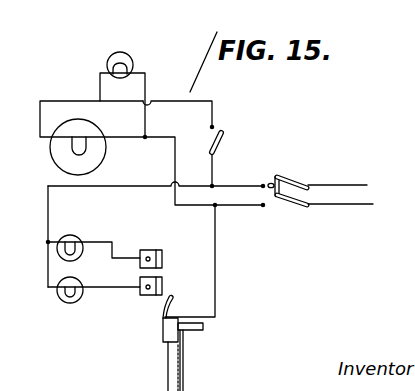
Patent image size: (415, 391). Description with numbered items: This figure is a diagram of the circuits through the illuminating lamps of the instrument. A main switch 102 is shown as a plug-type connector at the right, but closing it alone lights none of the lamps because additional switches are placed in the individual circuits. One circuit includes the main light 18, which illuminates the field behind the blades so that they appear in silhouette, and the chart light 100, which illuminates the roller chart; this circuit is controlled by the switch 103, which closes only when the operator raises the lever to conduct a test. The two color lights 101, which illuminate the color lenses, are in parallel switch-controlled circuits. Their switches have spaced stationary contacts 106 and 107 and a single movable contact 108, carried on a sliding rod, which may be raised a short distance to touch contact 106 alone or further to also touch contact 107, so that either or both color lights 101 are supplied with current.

The chart light 100 is at (142, 52).
The main light 18 is at (60, 155).
The switch 103 is at (225, 134).
The main switch 102 is at (297, 178).
The color lights 101 is at (80, 251).
The stationary contact 107 is at (158, 251).
The stationary contact 106 is at (163, 282).
The movable contact 108 is at (163, 313).